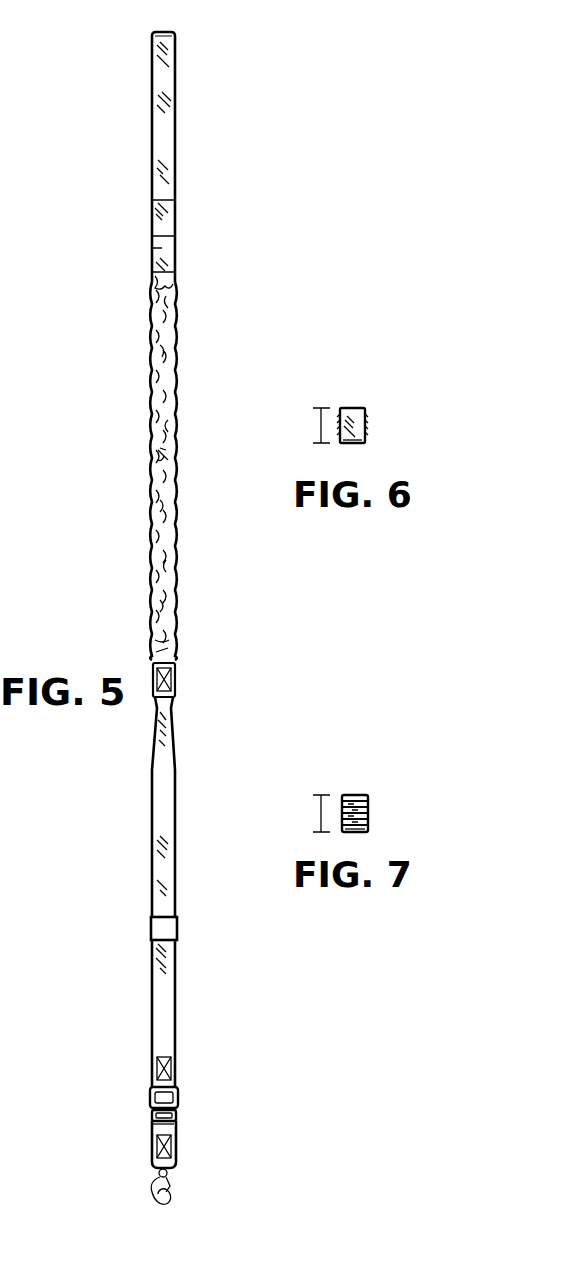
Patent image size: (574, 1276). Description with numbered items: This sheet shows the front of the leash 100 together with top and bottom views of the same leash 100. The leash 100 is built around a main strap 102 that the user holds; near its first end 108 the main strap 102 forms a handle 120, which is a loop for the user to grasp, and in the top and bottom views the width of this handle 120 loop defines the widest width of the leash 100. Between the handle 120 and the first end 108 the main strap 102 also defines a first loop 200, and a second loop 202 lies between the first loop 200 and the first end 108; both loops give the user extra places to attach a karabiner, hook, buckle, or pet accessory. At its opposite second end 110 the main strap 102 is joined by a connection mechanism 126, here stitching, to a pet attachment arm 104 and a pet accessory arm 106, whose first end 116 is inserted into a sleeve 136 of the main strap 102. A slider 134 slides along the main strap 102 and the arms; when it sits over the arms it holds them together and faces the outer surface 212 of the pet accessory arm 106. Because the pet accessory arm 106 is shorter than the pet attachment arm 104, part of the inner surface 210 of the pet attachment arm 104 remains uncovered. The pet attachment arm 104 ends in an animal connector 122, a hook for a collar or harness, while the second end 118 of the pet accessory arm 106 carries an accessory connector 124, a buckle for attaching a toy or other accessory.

In FIG. 5, the leash 100 is at (103, 128).
In FIG. 6, the leash 100 is at (468, 416).
In FIG. 7, the leash 100 is at (468, 799).
In FIG. 5, the main strap 102 is at (176, 420).
In FIG. 5, the pet attachment arm 104 is at (160, 1128).
In FIG. 5, the pet accessory arm 106 is at (163, 829).
In FIG. 5, the first end 108 is at (176, 275).
In FIG. 5, the second end 110 is at (176, 688).
In FIG. 5, the first end 116 is at (173, 718).
In FIG. 5, the second end 118 is at (177, 1072).
In FIG. 5, the handle 120 is at (176, 133).
In FIG. 6, the handle 120 is at (350, 407).
In FIG. 7, the handle 120 is at (353, 794).
In FIG. 5, the animal connector 122 is at (150, 1200).
In FIG. 6, the animal connector 122 is at (366, 425).
In FIG. 7, the animal connector 122 is at (368, 808).
In FIG. 5, the accessory connector 124 is at (177, 1102).
In FIG. 6, the accessory connector 124 is at (366, 428).
In FIG. 7, the accessory connector 124 is at (368, 815).
In FIG. 5, the connection mechanism 126 is at (176, 667).
In FIG. 5, the slider 134 is at (150, 932).
In FIG. 5, the sleeve 136 is at (164, 462).
In FIG. 5, the first loop 200 is at (163, 218).
In FIG. 5, the second loop 202 is at (164, 253).
In FIG. 5, the inner surface 210 is at (158, 1130).
In FIG. 5, the outer surface 212 is at (176, 977).